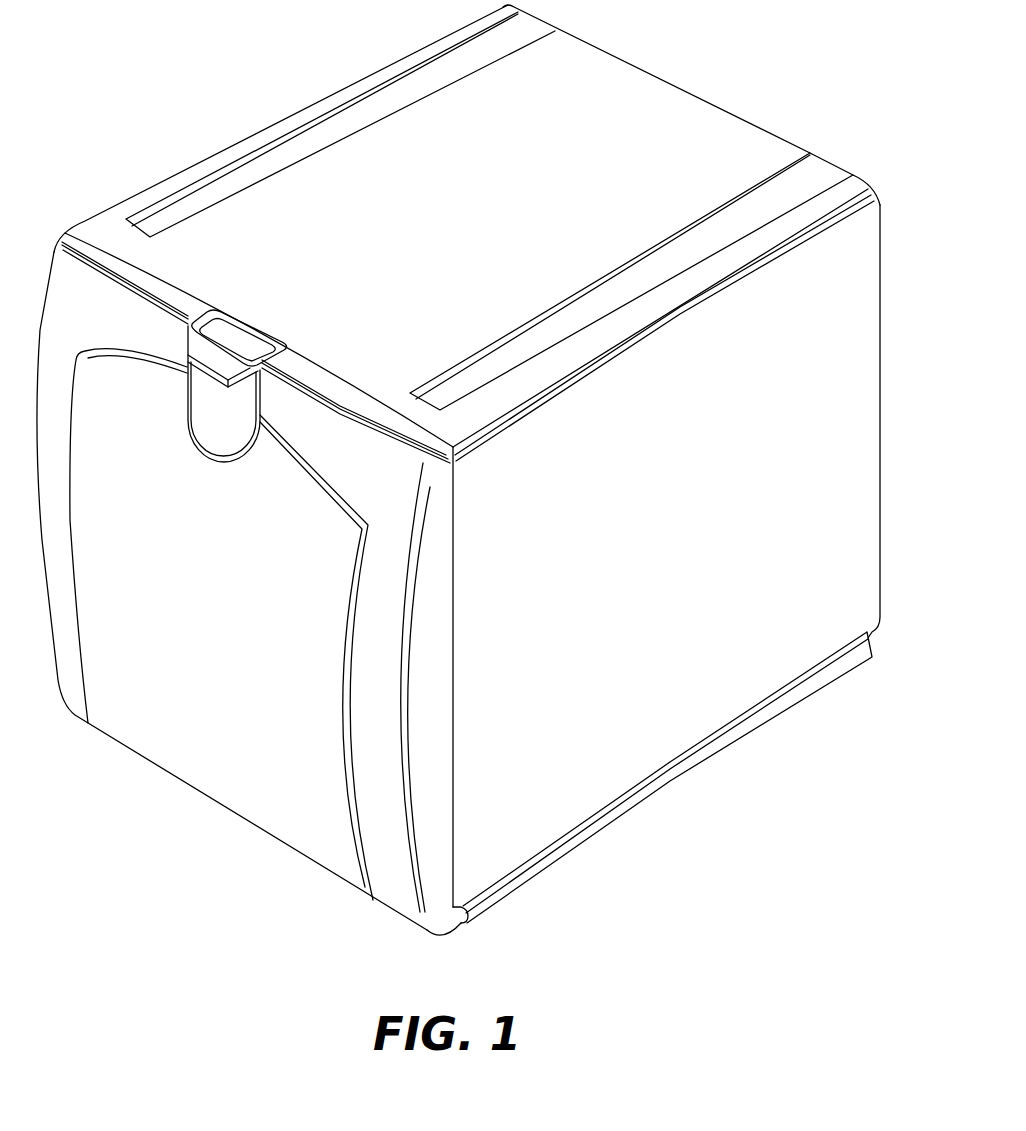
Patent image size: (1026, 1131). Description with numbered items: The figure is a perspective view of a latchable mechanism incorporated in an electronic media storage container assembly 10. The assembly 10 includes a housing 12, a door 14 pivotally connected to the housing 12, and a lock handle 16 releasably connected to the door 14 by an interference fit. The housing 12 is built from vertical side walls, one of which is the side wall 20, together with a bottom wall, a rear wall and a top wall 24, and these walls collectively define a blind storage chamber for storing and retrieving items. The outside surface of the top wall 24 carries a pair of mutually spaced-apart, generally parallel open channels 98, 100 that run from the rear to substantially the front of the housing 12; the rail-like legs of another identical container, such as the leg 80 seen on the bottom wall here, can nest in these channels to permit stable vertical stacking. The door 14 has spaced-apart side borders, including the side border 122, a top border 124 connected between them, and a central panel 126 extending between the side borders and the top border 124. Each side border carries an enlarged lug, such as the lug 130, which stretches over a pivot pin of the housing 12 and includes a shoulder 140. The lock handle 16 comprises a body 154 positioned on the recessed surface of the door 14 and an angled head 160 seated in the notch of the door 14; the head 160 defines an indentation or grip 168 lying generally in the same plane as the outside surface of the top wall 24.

The storage container assembly 10 is at (250, 63).
The housing 12 is at (674, 74).
The door 14 is at (264, 838).
The lock handle 16 is at (195, 450).
The side wall 20 is at (642, 573).
The top wall 24 is at (478, 225).
The leg 80 is at (630, 805).
The open channel 98 is at (341, 140).
The open channel 100 is at (673, 267).
The side border 122 is at (440, 677).
The top border 124 is at (152, 277).
The central panel 126 is at (228, 593).
The lug 130 is at (462, 926).
The shoulder 140 is at (470, 923).
The body 154 is at (213, 412).
The angled head 160 is at (190, 345).
The indentation or grip 168 is at (240, 337).